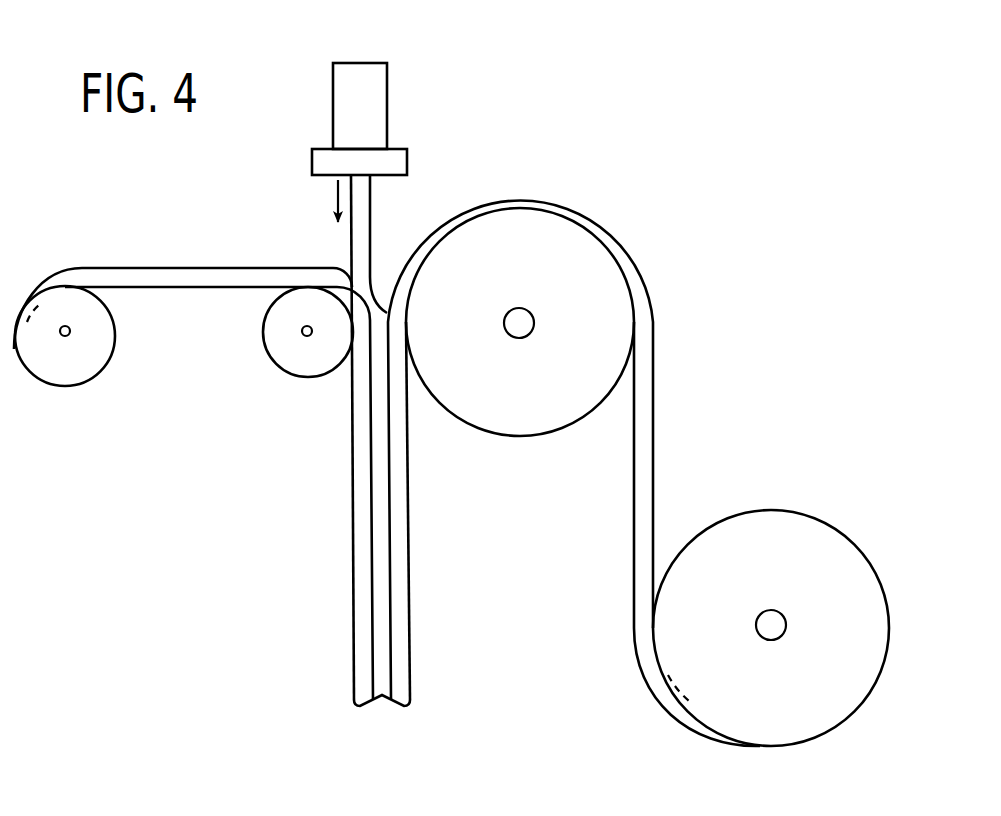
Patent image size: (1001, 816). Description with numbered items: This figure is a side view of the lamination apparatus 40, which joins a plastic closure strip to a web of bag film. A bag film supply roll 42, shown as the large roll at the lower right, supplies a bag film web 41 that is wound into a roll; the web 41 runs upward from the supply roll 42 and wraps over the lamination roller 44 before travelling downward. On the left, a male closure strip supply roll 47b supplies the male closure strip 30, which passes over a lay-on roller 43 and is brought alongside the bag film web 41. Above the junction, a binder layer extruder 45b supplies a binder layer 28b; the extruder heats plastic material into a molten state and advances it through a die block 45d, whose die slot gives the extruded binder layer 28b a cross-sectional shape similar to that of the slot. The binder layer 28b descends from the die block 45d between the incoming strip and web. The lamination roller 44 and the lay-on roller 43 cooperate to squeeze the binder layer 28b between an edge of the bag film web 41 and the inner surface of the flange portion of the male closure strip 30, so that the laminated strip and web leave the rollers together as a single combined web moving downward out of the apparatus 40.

The male closure strip 30 is at (185, 259).
The binder layer 28b is at (378, 205).
The binder layer extruder 45b is at (407, 58).
The die block 45d is at (417, 153).
The male closure strip supply roll 47b is at (57, 367).
The lay-on roller 43 is at (283, 355).
The lamination roller 44 is at (513, 425).
The bag film web 41 is at (648, 457).
The bag film supply roll 42 is at (768, 727).
The lamination apparatus 40 is at (217, 535).